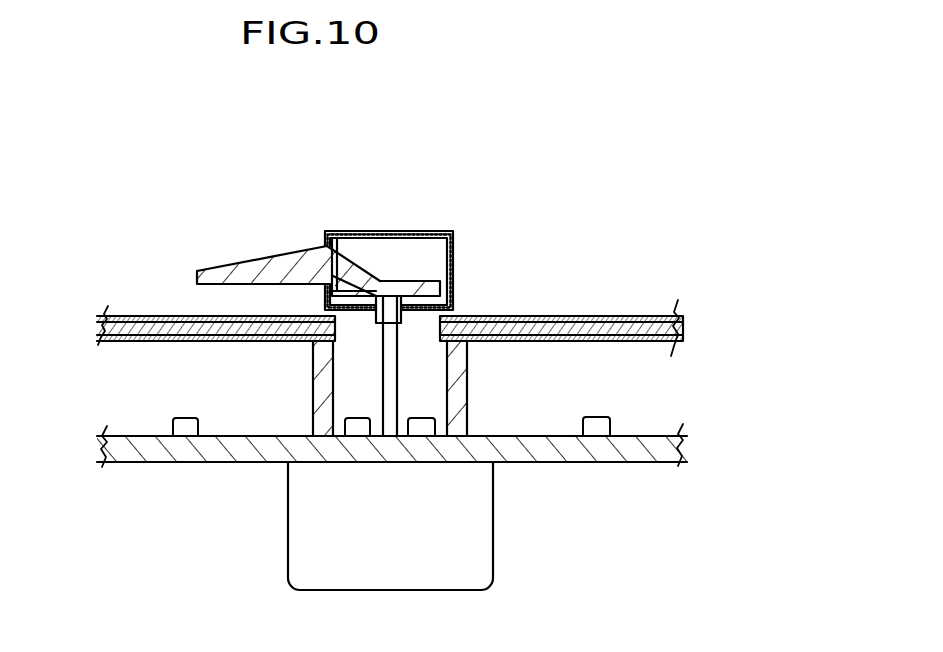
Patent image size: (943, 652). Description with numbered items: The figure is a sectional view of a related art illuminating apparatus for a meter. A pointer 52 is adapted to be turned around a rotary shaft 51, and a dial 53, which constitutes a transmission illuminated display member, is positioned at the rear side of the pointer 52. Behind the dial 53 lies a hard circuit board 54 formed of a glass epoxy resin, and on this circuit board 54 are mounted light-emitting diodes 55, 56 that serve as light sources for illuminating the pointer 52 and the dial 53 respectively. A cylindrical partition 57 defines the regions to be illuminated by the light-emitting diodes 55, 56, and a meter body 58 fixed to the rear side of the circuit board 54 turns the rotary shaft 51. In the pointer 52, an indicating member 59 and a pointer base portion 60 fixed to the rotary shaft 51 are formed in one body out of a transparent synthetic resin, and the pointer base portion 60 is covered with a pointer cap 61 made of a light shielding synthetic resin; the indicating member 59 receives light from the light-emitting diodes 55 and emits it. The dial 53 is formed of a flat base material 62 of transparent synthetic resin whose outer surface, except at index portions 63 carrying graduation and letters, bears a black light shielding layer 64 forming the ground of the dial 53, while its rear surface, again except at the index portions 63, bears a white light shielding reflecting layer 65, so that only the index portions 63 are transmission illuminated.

The rotary shaft 51 is at (368, 439).
The pointer 52 is at (384, 231).
The dial 53 is at (653, 304).
The hard circuit board 54 is at (392, 492).
The light-emitting diodes 55 is at (391, 512).
The light-emitting diodes 56 is at (406, 491).
The cylindrical partition 57 is at (387, 443).
The meter body 58 is at (346, 541).
The indicating member 59 is at (278, 227).
The pointer base portion 60 is at (434, 242).
The pointer cap 61 is at (447, 186).
The flat base material 62 is at (191, 292).
The index portions 63 is at (345, 256).
The light shielding layer 64 is at (216, 254).
The light shielding reflecting layer 65 is at (196, 377).